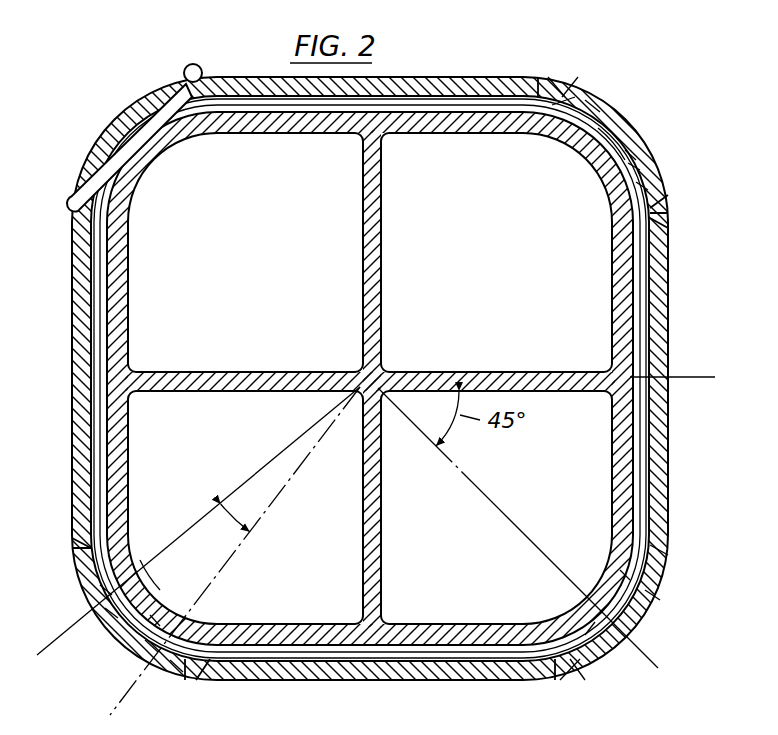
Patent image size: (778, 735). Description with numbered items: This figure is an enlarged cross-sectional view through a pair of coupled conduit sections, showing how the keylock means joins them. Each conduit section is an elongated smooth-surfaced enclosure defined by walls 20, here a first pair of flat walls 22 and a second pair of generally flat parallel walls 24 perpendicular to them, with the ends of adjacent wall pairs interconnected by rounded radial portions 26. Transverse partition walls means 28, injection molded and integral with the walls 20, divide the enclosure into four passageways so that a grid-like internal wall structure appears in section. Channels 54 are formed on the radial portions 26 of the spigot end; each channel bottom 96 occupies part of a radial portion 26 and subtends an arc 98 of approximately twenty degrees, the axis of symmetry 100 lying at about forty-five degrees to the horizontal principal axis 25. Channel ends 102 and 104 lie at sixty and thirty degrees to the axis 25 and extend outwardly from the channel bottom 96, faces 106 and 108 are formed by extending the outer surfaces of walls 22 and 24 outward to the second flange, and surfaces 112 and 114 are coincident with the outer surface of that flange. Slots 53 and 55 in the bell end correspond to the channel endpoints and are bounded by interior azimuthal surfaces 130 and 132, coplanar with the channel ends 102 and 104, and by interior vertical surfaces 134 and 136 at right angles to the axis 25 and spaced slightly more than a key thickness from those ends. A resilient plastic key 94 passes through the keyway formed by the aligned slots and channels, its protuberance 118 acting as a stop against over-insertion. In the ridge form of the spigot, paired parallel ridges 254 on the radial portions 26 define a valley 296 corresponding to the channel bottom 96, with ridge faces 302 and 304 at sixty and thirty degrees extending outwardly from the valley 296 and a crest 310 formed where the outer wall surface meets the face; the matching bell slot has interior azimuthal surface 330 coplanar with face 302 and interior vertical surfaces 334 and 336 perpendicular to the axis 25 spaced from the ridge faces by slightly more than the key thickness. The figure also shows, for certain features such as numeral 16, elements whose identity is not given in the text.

The corner liner portion 16 is at (147, 572).
The walls 20 is at (578, 463).
The first pair of flat walls 22 is at (626, 315).
The second pair of generally flat parallel walls 24 is at (430, 122).
The horizontal principal axis 25 is at (720, 393).
The radial portions 26 is at (160, 170).
The transverse partition walls means 28 is at (372, 326).
The slot 53 is at (560, 77).
The channels 54 is at (185, 120).
The slot 55 is at (631, 157).
The key 94 is at (180, 100).
The channel bottom 96 is at (612, 158).
The arc 98 is at (240, 516).
The axis of symmetry 100 is at (668, 690).
The channel end 102 is at (596, 110).
The channel end 104 is at (633, 167).
The face 106 is at (538, 77).
The face 108 is at (668, 213).
The surface 112 is at (562, 95).
The surface 114 is at (640, 187).
The protuberance 118 is at (192, 63).
The interior azimuthal surface 130 is at (553, 671).
The interior azimuthal surface 132 is at (650, 550).
The interior vertical surface 134 is at (580, 644).
The interior vertical surface 136 is at (648, 595).
The ridges 254 is at (122, 540).
The valley 296 is at (150, 613).
The face 302 is at (150, 650).
The face 304 is at (110, 588).
The crest 310 is at (92, 560).
The interior azimuthal surface 330 is at (192, 672).
The interior vertical surface 334 is at (178, 668).
The interior vertical surface 336 is at (108, 612).